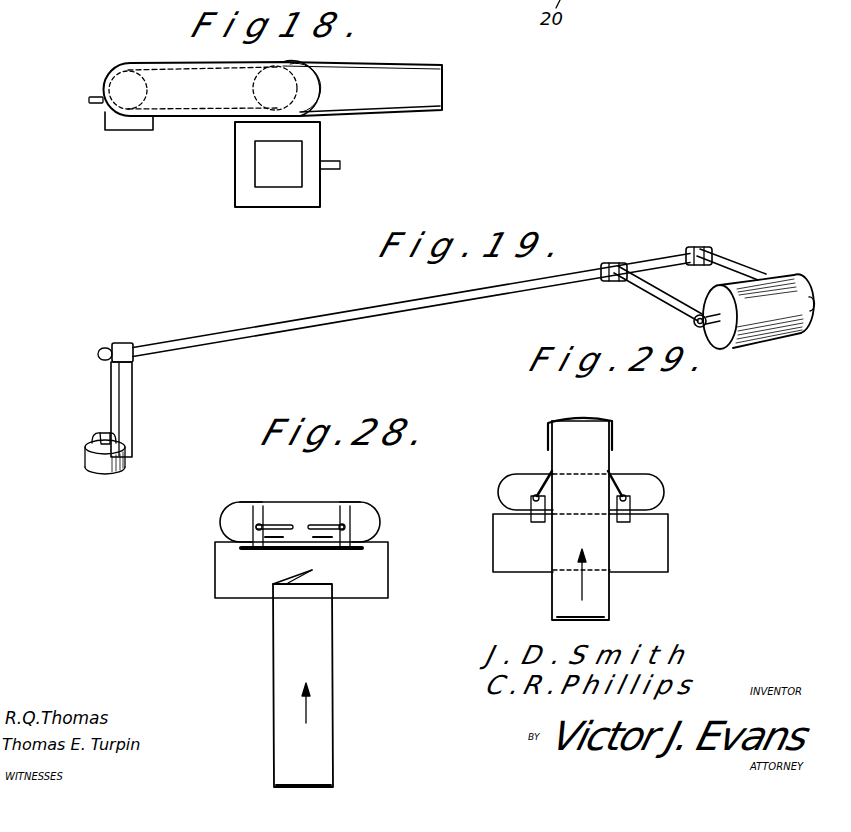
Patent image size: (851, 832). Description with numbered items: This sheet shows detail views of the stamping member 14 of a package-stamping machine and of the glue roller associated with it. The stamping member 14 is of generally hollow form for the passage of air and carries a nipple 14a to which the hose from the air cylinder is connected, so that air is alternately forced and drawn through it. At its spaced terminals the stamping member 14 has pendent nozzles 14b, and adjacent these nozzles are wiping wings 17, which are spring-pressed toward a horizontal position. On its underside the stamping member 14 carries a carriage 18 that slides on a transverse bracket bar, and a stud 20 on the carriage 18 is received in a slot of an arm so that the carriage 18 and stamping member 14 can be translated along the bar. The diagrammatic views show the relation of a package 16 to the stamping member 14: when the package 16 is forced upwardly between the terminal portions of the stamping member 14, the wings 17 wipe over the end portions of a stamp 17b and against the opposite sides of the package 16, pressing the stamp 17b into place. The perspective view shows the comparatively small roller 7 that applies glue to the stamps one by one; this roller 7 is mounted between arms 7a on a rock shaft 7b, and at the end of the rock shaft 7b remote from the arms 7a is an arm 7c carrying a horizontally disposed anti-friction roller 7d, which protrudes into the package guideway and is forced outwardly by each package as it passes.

In FIG. 19, the roller 7 is at (775, 331).
In FIG. 19, the arms 7a is at (637, 283).
In FIG. 19, the rock shaft 7b is at (433, 303).
In FIG. 19, the arm 7c is at (124, 414).
In FIG. 19, the anti-friction roller 7d is at (112, 473).
In FIG. 18, the stamping member 14 is at (250, 92).
In FIG. 28, the stamping member 14 is at (236, 510).
In FIG. 29, the stamping member 14 is at (648, 480).
In FIG. 18, the nipple 14a is at (450, 45).
In FIG. 18, the nozzles 14b is at (139, 130).
In FIG. 28, the nozzles 14b is at (246, 546).
In FIG. 29, the nozzles 14b is at (531, 520).
In FIG. 28, the package 16 is at (330, 660).
In FIG. 29, the package 16 is at (552, 586).
In FIG. 18, the wiping wings 17 is at (88, 102).
In FIG. 28, the wiping wings 17 is at (320, 523).
In FIG. 29, the wiping wings 17 is at (550, 470).
In FIG. 28, the stamp 17b is at (287, 553).
In FIG. 29, the stamp 17b is at (607, 420).
In FIG. 18, the carriage 18 is at (270, 200).
In FIG. 28, the carriage 18 is at (237, 592).
In FIG. 29, the carriage 18 is at (580, 543).
In FIG. 18, the stud 20 is at (345, 165).